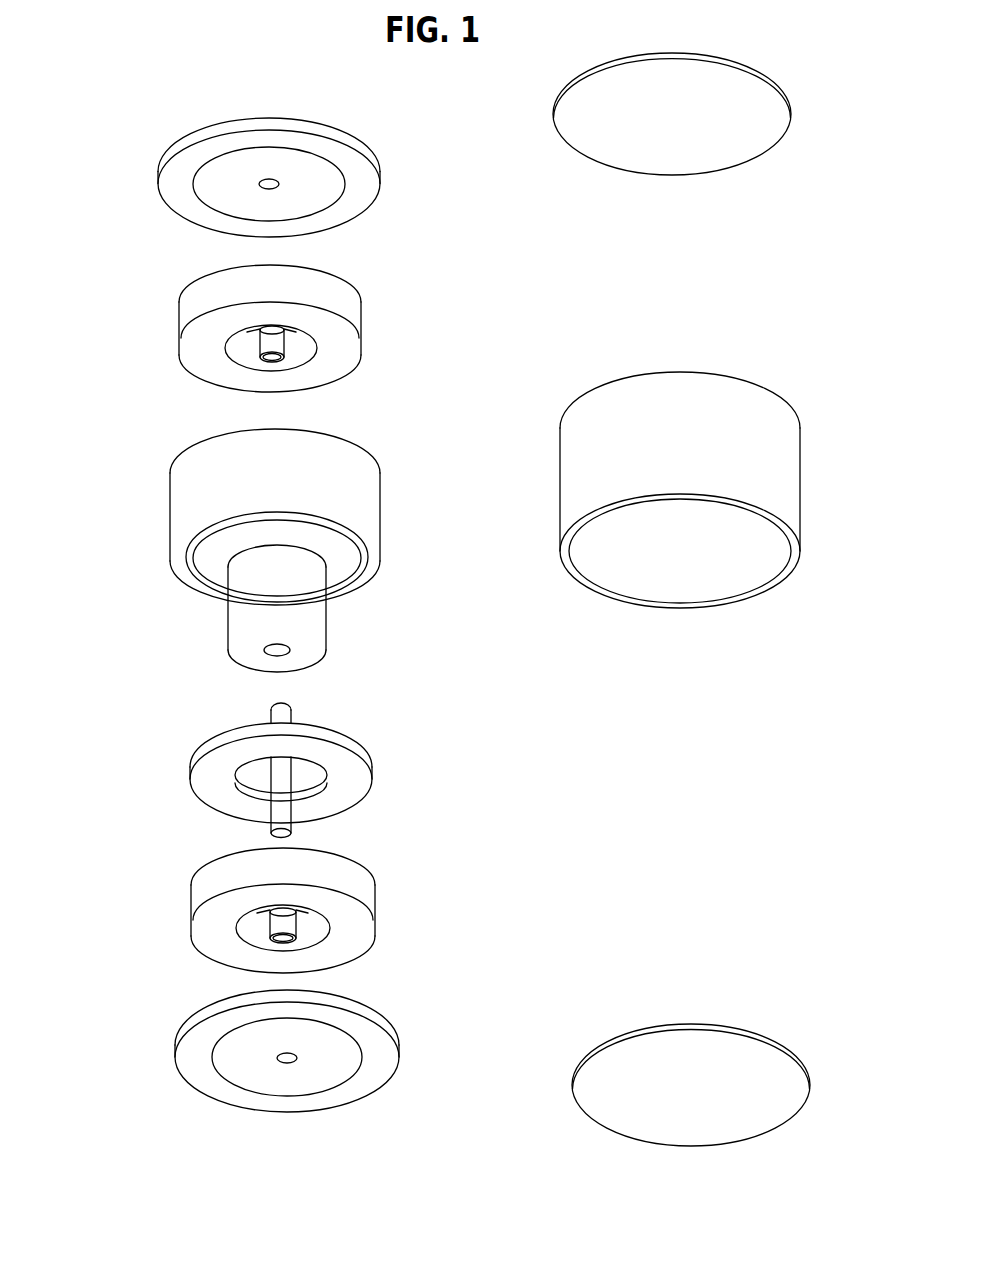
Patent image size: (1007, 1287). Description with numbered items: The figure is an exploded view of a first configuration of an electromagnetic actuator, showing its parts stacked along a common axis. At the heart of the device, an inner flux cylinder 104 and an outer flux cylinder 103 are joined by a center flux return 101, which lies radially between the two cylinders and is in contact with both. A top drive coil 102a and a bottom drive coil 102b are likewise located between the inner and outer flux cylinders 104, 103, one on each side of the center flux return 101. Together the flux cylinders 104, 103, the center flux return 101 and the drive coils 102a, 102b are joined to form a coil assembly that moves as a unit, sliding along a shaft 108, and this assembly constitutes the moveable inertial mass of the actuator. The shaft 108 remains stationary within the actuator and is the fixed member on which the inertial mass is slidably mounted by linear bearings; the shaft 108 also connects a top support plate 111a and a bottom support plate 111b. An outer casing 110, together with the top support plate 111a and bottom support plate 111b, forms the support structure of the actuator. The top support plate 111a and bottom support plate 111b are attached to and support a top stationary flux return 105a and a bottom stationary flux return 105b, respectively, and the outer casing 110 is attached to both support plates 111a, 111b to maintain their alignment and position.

The center flux return 101 is at (353, 778).
The top drive coil 102a is at (333, 363).
The bottom drive coil 102b is at (348, 932).
The outer flux cylinder 103 is at (224, 493).
The inner flux cylinder 104 is at (252, 612).
The top stationary flux return 105a is at (186, 189).
The bottom stationary flux return 105b is at (215, 1090).
The shaft 108 is at (277, 805).
The outer casing 110 is at (682, 580).
The top support plate 111a is at (642, 158).
The bottom support plate 111b is at (610, 1095).